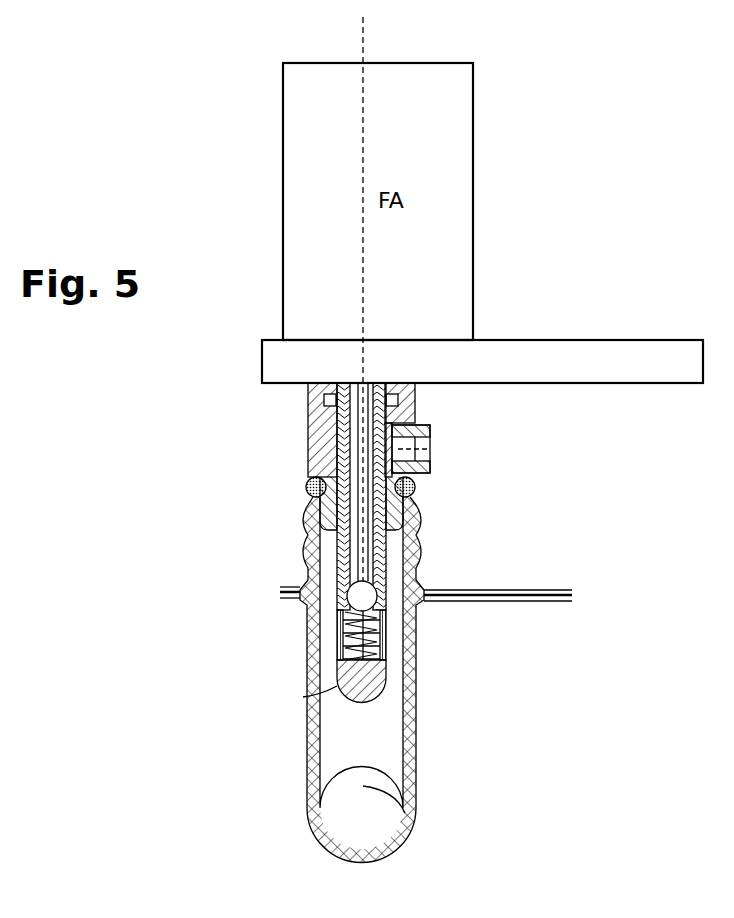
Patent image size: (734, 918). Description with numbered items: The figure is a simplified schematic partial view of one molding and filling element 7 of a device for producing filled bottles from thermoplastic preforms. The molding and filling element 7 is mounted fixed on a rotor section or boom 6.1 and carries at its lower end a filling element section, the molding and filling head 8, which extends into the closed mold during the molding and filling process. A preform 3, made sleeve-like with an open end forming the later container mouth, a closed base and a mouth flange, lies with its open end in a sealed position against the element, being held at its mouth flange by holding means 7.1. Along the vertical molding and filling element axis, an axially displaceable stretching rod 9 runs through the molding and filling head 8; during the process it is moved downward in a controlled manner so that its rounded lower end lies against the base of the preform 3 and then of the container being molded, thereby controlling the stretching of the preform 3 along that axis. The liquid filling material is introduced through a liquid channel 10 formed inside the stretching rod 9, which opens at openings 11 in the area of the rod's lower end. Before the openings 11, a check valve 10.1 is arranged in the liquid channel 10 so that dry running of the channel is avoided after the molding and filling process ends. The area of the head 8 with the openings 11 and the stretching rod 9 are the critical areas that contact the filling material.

The preform 3 is at (417, 723).
The boom 6.1 is at (551, 353).
The molding and filling element 7 is at (305, 187).
The holding means 7.1 is at (548, 592).
The molding and filling head 8 is at (308, 420).
The stretching rod 9 is at (337, 566).
The liquid channel 10 is at (367, 463).
The check valve 10.1 is at (372, 597).
The openings 11 is at (386, 655).